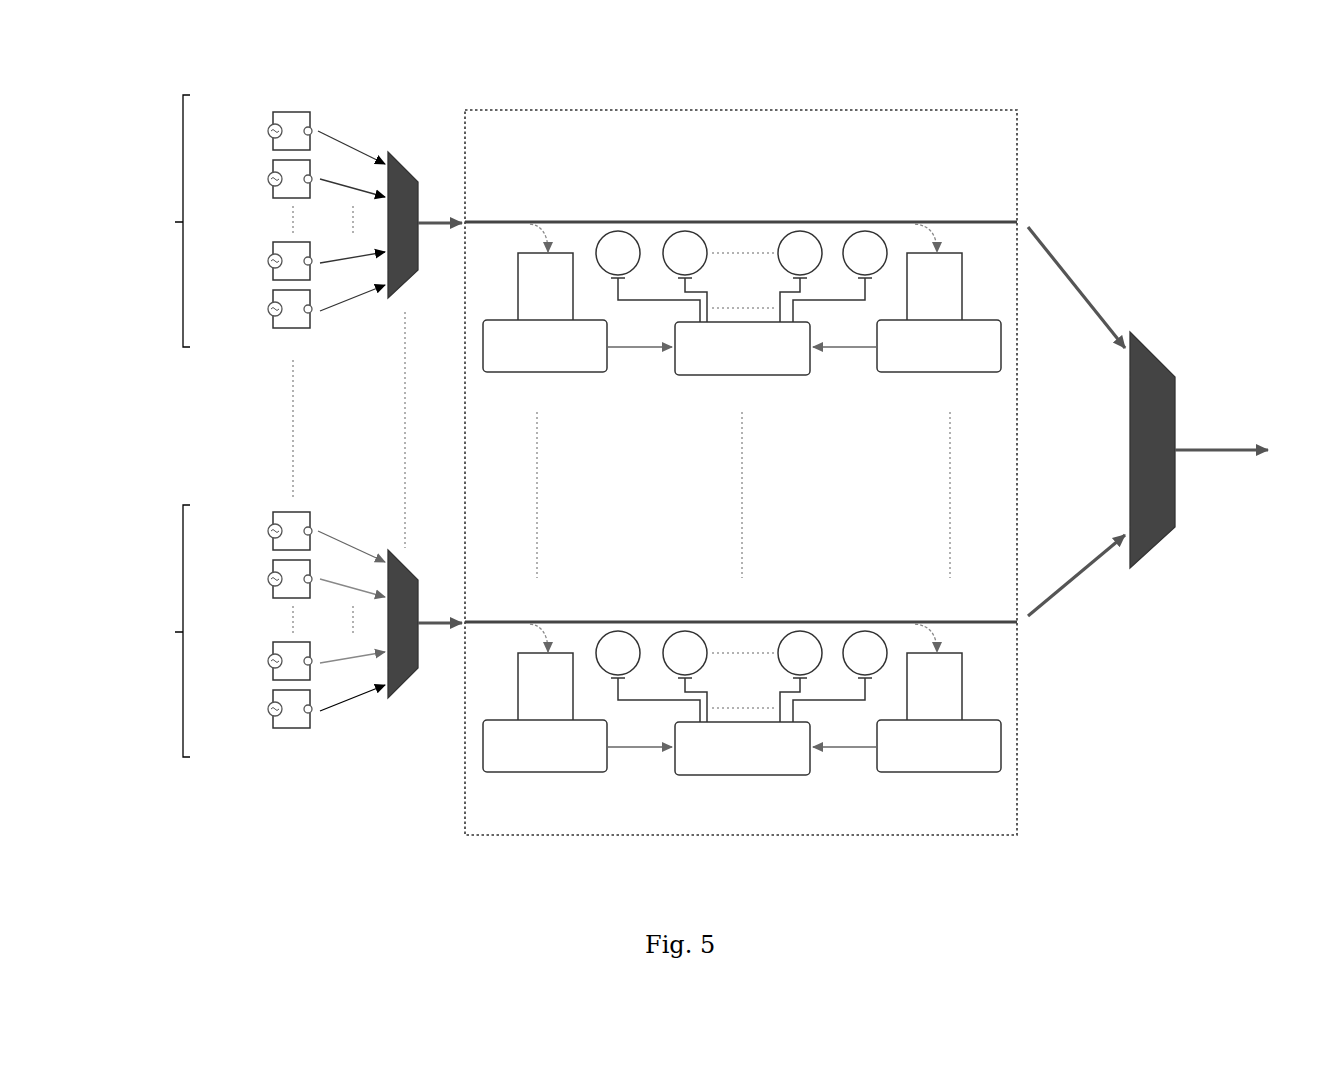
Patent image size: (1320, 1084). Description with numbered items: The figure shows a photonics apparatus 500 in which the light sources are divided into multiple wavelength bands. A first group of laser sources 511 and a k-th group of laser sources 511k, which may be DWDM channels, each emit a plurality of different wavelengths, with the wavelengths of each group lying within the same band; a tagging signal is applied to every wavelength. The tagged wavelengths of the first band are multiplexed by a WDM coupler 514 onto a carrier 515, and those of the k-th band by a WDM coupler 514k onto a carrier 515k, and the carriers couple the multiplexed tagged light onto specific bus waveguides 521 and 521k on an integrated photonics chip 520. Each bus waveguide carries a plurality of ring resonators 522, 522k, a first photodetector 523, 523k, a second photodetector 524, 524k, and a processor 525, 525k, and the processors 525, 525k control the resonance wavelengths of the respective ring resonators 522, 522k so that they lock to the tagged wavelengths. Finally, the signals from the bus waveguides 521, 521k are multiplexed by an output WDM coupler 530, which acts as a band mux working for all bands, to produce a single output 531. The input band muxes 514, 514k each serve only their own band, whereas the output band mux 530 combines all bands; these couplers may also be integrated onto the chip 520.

The photonics apparatus 500 is at (1198, 92).
The light sources 511 is at (252, 221).
The light sources 511k is at (251, 631).
The WDM coupler 514 is at (400, 152).
The WDM coupler 514k is at (397, 694).
The carrier 515 is at (432, 218).
The carrier 515k is at (430, 627).
The photonics chip 520 is at (785, 128).
The bus waveguide 521 is at (1036, 233).
The bus waveguide 521k is at (1036, 616).
The ring resonators 522 is at (639, 237).
The ring resonators 522k is at (639, 637).
The first photodetector 523 is at (549, 373).
The first photodetector 523k is at (549, 773).
The second photodetector 524 is at (932, 373).
The second photodetector 524k is at (932, 773).
The processor 525 is at (748, 375).
The processor 525k is at (748, 775).
The WDM coupler 530 is at (1157, 360).
The output 531 is at (1226, 454).